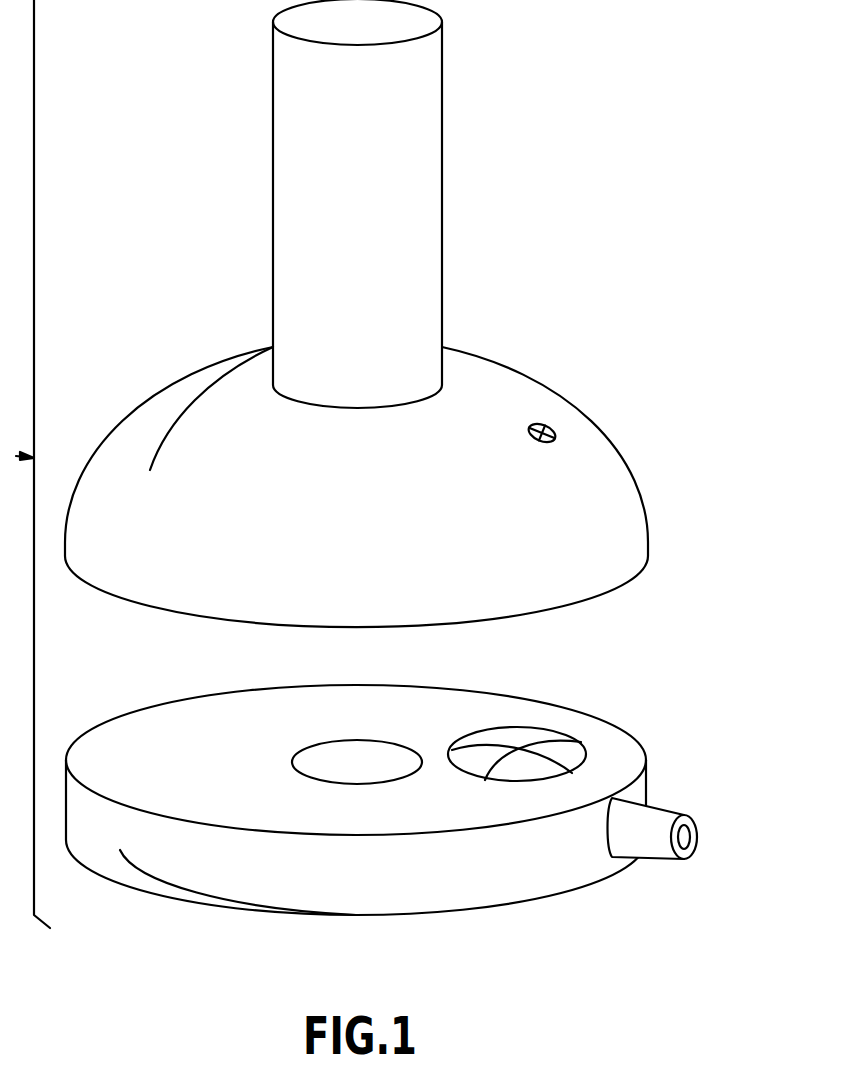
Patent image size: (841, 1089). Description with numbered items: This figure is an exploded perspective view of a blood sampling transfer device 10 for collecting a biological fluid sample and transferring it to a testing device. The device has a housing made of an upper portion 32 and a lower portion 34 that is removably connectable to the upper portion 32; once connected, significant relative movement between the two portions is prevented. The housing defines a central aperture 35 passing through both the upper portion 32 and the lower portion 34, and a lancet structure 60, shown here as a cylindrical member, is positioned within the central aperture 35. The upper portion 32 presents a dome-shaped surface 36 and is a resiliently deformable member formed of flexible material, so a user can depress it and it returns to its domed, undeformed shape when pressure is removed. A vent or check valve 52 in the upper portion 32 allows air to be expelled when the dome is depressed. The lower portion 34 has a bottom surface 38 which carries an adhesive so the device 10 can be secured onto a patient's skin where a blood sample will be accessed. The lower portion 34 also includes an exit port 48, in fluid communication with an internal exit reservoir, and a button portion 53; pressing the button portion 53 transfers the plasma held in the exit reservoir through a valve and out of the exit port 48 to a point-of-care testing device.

The blood sampling transfer device 10 is at (622, 200).
The upper portion 32 is at (650, 556).
The lower portion 34 is at (78, 742).
The central aperture 35 is at (353, 762).
The dome-shaped surface 36 is at (180, 415).
The bottom surface 38 is at (178, 895).
The exit port 48 is at (658, 810).
The vent or check valve 52 is at (543, 425).
The button portion 53 is at (580, 745).
The lancet structure 60 is at (442, 238).